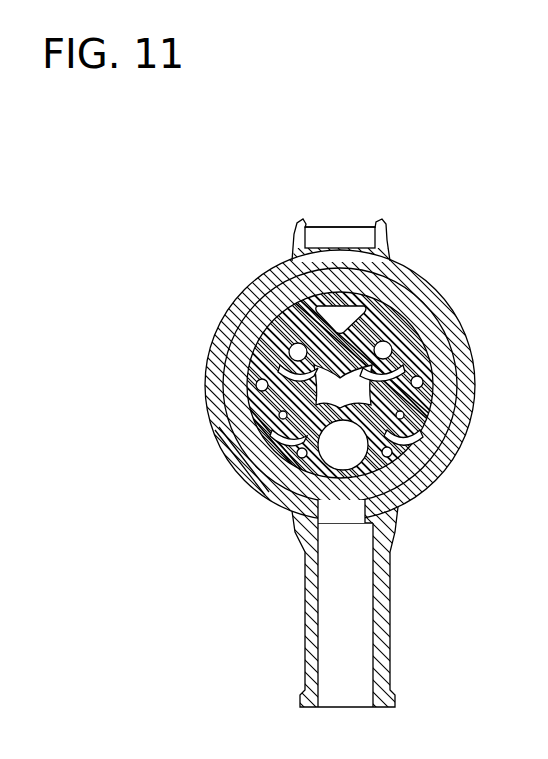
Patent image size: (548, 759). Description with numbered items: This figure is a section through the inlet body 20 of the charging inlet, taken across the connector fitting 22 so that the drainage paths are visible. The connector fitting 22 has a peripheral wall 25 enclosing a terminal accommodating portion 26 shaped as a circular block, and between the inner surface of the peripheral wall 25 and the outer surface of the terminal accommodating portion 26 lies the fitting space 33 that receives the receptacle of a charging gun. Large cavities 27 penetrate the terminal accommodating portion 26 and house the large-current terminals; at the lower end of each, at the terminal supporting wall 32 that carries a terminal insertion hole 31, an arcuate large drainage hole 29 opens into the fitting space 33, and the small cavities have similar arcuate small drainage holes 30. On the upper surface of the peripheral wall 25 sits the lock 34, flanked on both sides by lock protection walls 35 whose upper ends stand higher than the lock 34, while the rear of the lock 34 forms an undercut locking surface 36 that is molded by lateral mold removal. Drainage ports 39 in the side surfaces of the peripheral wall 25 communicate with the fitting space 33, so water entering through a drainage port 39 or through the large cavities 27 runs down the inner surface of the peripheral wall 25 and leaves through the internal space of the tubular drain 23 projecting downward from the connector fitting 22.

The inlet body 20 is at (343, 131).
The connector fitting 22 is at (215, 536).
The drain 23 is at (386, 574).
The peripheral wall 25 is at (228, 470).
The terminal accommodating portion 26 is at (258, 410).
The large cavities 27 is at (341, 445).
The large drainage hole 29 is at (432, 404).
The small drainage hole 30 is at (423, 437).
The terminal insertion hole 31 is at (410, 327).
The terminal supporting wall 32 is at (386, 352).
The fitting space 33 is at (393, 498).
The lock 34 is at (358, 227).
The lock protection walls 35 is at (298, 232).
The locking surface 36 is at (337, 236).
The drainage port 39 is at (227, 337).